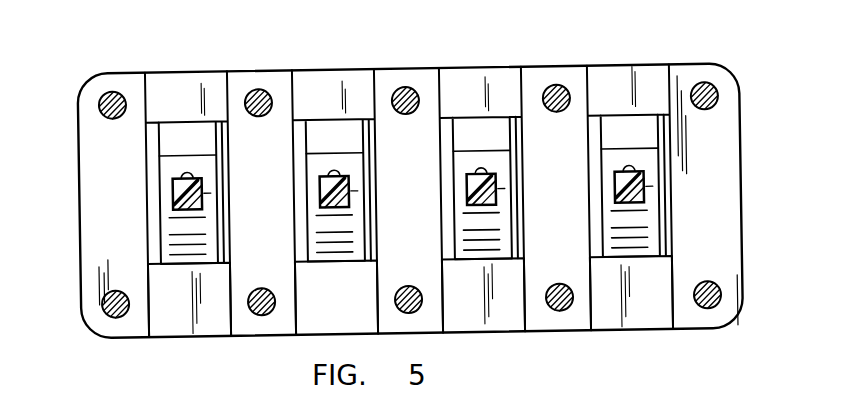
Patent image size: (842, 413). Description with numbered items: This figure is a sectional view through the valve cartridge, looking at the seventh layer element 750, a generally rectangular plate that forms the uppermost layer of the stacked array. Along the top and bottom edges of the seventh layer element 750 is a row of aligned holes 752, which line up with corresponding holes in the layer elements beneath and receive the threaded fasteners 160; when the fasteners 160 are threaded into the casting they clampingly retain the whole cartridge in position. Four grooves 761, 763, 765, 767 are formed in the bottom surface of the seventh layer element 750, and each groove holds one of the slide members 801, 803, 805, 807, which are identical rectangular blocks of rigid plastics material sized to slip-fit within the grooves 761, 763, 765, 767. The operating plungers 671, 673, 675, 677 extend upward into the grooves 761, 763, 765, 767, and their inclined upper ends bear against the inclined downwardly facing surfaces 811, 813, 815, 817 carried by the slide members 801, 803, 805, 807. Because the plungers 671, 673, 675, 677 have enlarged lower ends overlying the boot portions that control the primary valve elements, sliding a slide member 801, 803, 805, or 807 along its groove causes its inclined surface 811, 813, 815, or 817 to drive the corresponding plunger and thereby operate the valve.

The seventh layer element 750 is at (642, 61).
The aligned holes 752 is at (108, 91).
The threaded fasteners 160 is at (101, 108).
The slide member 801 is at (680, 226).
The slide member 803 is at (534, 227).
The slide member 805 is at (383, 236).
The slide member 807 is at (237, 240).
The inclined downwardly facing surface 811 is at (629, 136).
The inclined downwardly facing surface 813 is at (481, 138).
The inclined downwardly facing surface 815 is at (334, 141).
The inclined downwardly facing surface 817 is at (187, 143).
The operating plunger 671 is at (616, 184).
The operating plunger 673 is at (468, 187).
The operating plunger 675 is at (321, 190).
The operating plunger 677 is at (174, 190).
The groove 761 is at (655, 318).
The groove 763 is at (503, 318).
The groove 765 is at (315, 320).
The groove 767 is at (187, 322).